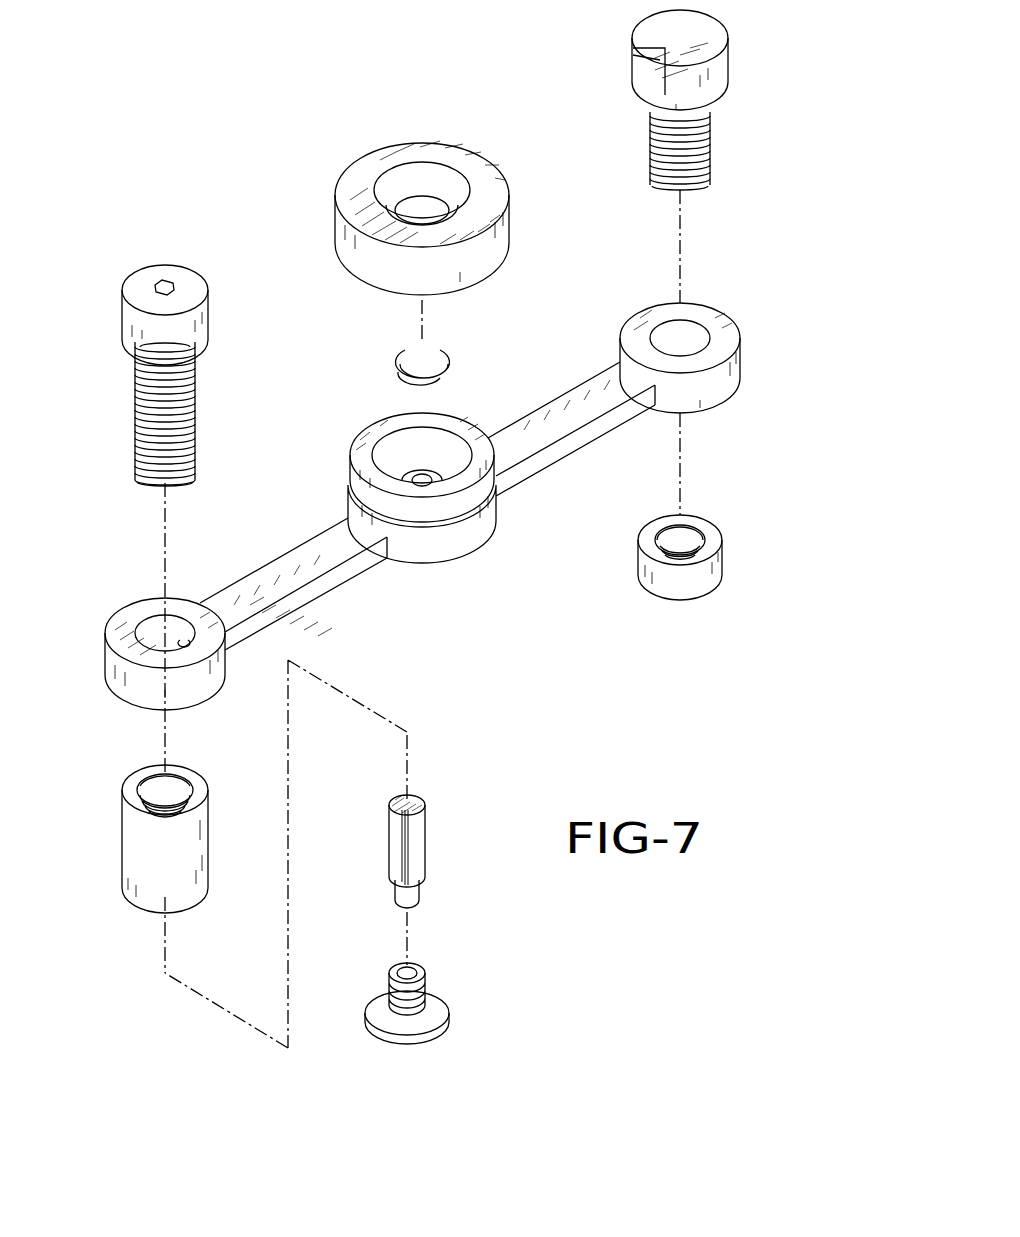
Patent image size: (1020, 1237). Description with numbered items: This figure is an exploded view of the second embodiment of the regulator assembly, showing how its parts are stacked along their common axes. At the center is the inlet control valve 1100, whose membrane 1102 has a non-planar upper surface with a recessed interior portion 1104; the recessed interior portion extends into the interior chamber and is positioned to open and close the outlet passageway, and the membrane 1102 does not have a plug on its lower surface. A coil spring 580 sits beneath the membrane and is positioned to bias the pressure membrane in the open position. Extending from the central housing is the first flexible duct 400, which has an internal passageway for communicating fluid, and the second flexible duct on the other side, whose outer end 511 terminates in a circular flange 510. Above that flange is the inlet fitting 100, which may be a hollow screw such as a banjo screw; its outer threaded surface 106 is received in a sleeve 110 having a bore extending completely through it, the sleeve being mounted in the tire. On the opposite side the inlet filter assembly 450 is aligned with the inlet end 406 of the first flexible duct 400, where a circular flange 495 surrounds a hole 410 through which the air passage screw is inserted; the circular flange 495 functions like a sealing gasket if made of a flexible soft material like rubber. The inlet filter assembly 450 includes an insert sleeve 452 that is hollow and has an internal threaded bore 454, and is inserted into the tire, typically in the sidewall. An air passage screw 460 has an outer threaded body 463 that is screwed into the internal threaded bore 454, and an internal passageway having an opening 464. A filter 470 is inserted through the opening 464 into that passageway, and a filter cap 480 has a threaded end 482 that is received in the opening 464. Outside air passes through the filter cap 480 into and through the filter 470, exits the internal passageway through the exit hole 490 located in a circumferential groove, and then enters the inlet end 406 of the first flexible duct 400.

The inlet fitting 100 is at (722, 98).
The outer threaded surface 106 is at (770, 131).
The sleeve 110 is at (690, 585).
The first flexible duct 400 is at (292, 560).
The inlet end 406 is at (183, 637).
The hole 410 is at (148, 630).
The inlet filter assembly 450 is at (181, 327).
The insert sleeve 452 is at (140, 817).
The internal threaded bore 454 is at (153, 780).
The air passage screw 460 is at (213, 314).
The outer threaded body 463 is at (190, 455).
The opening 464 is at (155, 485).
The filter 470 is at (395, 843).
The filter cap 480 is at (448, 1000).
The threaded end 482 is at (425, 986).
The exit hole 490 is at (145, 355).
The circular flange 495 is at (147, 620).
The circular flange 510 is at (697, 346).
The outer end 511 is at (705, 312).
The coil spring 580 is at (445, 355).
The inlet control valve 1100 is at (370, 166).
The membrane 1102 is at (345, 190).
The recessed interior portion 1104 is at (438, 195).